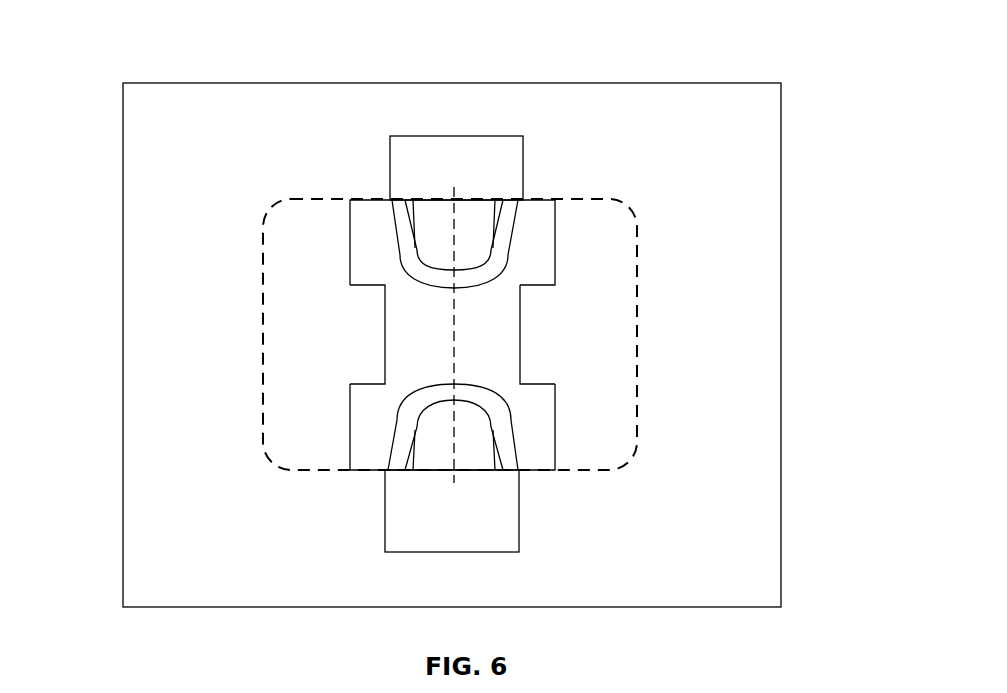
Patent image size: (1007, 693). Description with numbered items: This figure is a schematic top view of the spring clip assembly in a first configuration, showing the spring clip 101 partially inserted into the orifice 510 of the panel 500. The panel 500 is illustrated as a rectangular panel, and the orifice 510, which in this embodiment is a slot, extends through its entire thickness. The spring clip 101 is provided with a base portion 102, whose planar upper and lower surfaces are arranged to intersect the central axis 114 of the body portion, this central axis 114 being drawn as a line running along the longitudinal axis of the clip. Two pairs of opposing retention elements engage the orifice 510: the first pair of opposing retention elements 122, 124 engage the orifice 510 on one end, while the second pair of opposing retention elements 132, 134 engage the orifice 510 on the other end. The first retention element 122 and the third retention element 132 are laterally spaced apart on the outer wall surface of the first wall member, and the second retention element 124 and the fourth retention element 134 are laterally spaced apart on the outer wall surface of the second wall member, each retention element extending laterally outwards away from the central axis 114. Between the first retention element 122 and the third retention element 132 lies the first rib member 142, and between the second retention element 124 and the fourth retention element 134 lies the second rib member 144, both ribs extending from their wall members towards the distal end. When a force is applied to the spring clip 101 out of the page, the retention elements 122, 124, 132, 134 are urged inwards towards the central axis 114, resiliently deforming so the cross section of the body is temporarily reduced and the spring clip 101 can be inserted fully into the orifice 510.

The panel 500 is at (816, 91).
The spring clip 101 is at (341, 244).
The base portion 102 is at (300, 353).
The central axis 114 is at (453, 195).
The third retention element 132 is at (367, 232).
The fourth retention element 134 is at (540, 232).
The first rib member 142 is at (385, 312).
The second rib member 144 is at (520, 323).
The first retention element 122 is at (362, 417).
The second retention element 124 is at (535, 419).
The orifice 510 is at (497, 508).